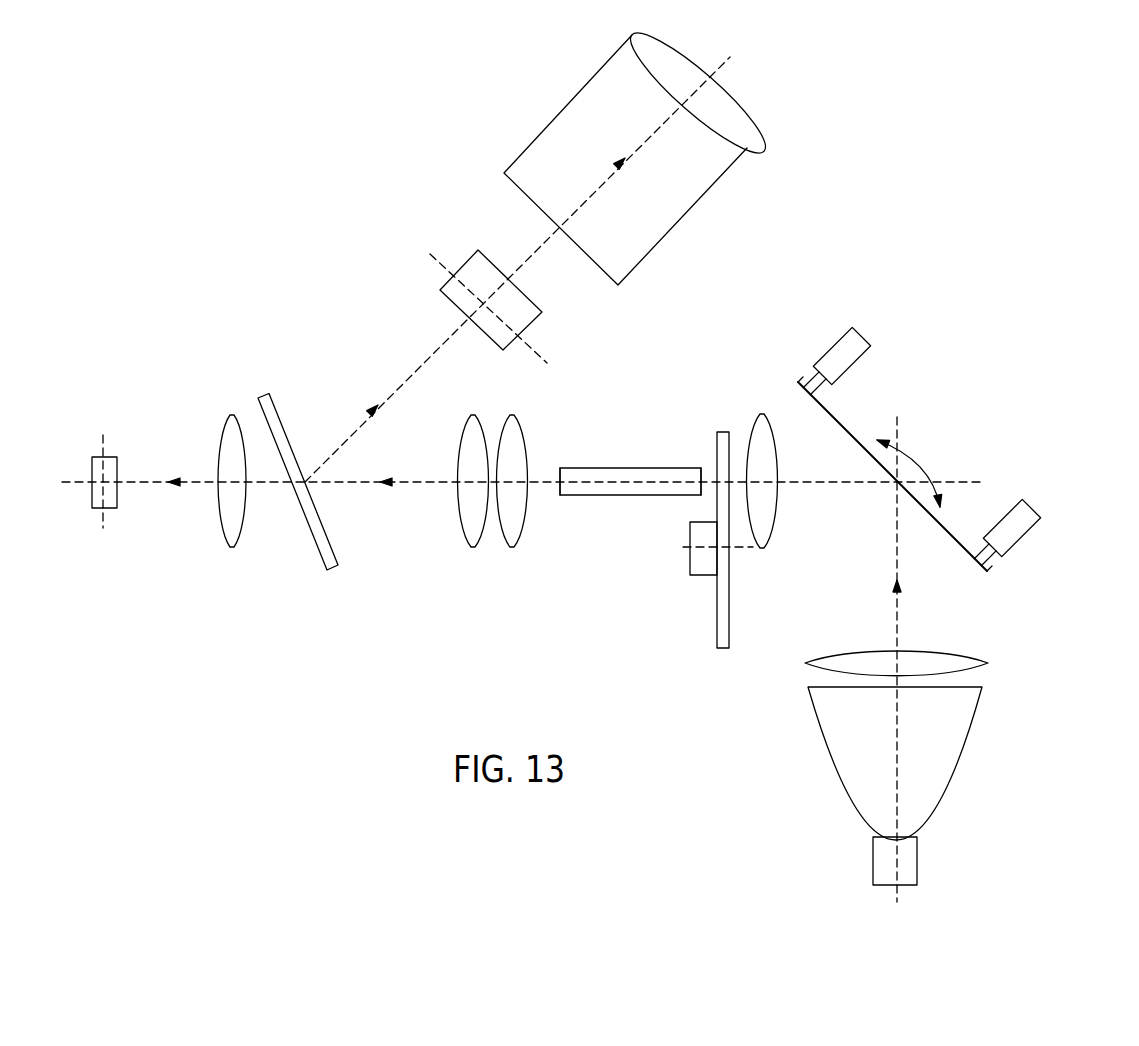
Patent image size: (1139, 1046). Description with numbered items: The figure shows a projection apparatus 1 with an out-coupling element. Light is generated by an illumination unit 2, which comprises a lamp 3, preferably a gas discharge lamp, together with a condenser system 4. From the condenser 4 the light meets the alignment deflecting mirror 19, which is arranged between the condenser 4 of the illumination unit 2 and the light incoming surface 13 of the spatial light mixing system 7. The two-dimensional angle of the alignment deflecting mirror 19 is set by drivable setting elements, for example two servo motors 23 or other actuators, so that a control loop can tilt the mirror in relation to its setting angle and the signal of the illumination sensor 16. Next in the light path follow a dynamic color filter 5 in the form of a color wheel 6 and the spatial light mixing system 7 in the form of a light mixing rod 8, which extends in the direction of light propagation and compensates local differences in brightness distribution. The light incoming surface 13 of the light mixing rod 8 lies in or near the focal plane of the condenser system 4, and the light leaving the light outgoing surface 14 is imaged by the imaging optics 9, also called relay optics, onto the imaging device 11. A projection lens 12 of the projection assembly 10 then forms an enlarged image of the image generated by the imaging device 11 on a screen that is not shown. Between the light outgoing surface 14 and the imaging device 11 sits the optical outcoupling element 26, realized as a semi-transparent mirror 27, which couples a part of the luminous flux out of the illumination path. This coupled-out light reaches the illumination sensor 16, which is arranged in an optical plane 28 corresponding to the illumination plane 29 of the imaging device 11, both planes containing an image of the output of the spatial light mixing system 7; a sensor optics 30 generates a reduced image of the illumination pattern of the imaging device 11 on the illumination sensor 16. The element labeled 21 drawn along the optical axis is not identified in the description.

The projection apparatus 1 is at (181, 267).
The illumination unit 2 is at (972, 786).
The lamp 3 is at (975, 752).
The condenser system 4 is at (760, 413).
The dynamic color filter 5 is at (706, 540).
The color wheel 6 is at (717, 603).
The spatial light mixing system 7 is at (630, 507).
The light mixing rod 8 is at (628, 496).
The imaging optics 9 is at (470, 548).
The projection assembly 10 is at (416, 165).
The imaging device 11 is at (456, 312).
The projection lens 12 is at (760, 122).
The light incoming surface 13 is at (703, 467).
The light outgoing surface 14 is at (558, 467).
The illumination sensor 16 is at (92, 495).
The alignment deflecting mirror 19 is at (945, 527).
The optical axis / light beam 21 is at (414, 485).
The servo motors 23 is at (857, 364).
The optical outcoupling element 26 is at (298, 499).
The semi-transparent mirror 27 is at (323, 553).
The optical plane 28 is at (103, 437).
The illumination plane 29 is at (430, 254).
The sensor optics 30 is at (224, 432).